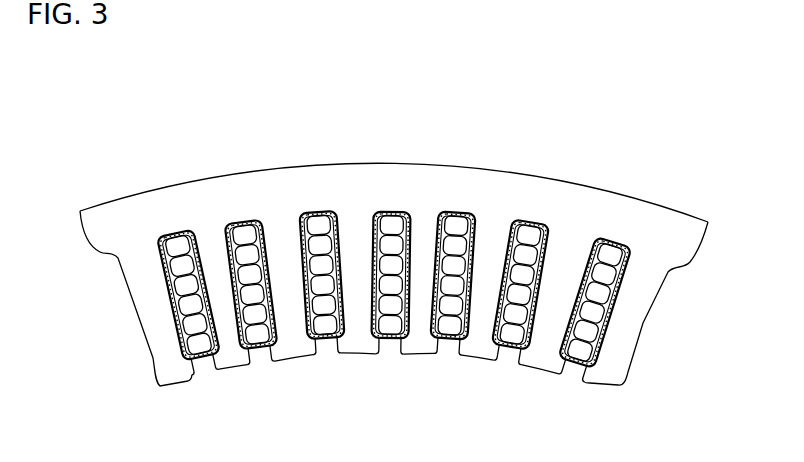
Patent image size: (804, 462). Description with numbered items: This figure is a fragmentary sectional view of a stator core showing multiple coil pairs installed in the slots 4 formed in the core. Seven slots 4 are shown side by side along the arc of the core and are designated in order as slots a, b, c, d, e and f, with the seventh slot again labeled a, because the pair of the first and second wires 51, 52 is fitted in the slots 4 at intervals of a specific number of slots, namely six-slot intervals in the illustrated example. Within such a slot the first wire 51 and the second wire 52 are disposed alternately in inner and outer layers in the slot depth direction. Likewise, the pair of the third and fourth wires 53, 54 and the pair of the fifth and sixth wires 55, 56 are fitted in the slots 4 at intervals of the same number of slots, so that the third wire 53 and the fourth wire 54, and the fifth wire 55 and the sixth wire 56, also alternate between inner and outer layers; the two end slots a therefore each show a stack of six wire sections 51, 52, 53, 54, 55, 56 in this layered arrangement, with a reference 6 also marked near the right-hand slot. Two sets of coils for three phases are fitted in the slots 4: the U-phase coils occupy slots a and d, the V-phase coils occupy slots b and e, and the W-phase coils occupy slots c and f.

The slot 4 is at (322, 340).
The slot 6 is at (574, 372).
The first wire 51 is at (176, 246).
The second wire 52 is at (180, 266).
The third wire 53 is at (184, 285).
The fourth wire 54 is at (188, 305).
The fifth wire 55 is at (194, 325).
The sixth wire 56 is at (198, 345).
The slot a is at (180, 232).
The slot b is at (247, 222).
The slot c is at (322, 215).
The slot d is at (392, 213).
The slot e is at (457, 213).
The slot f is at (532, 222).